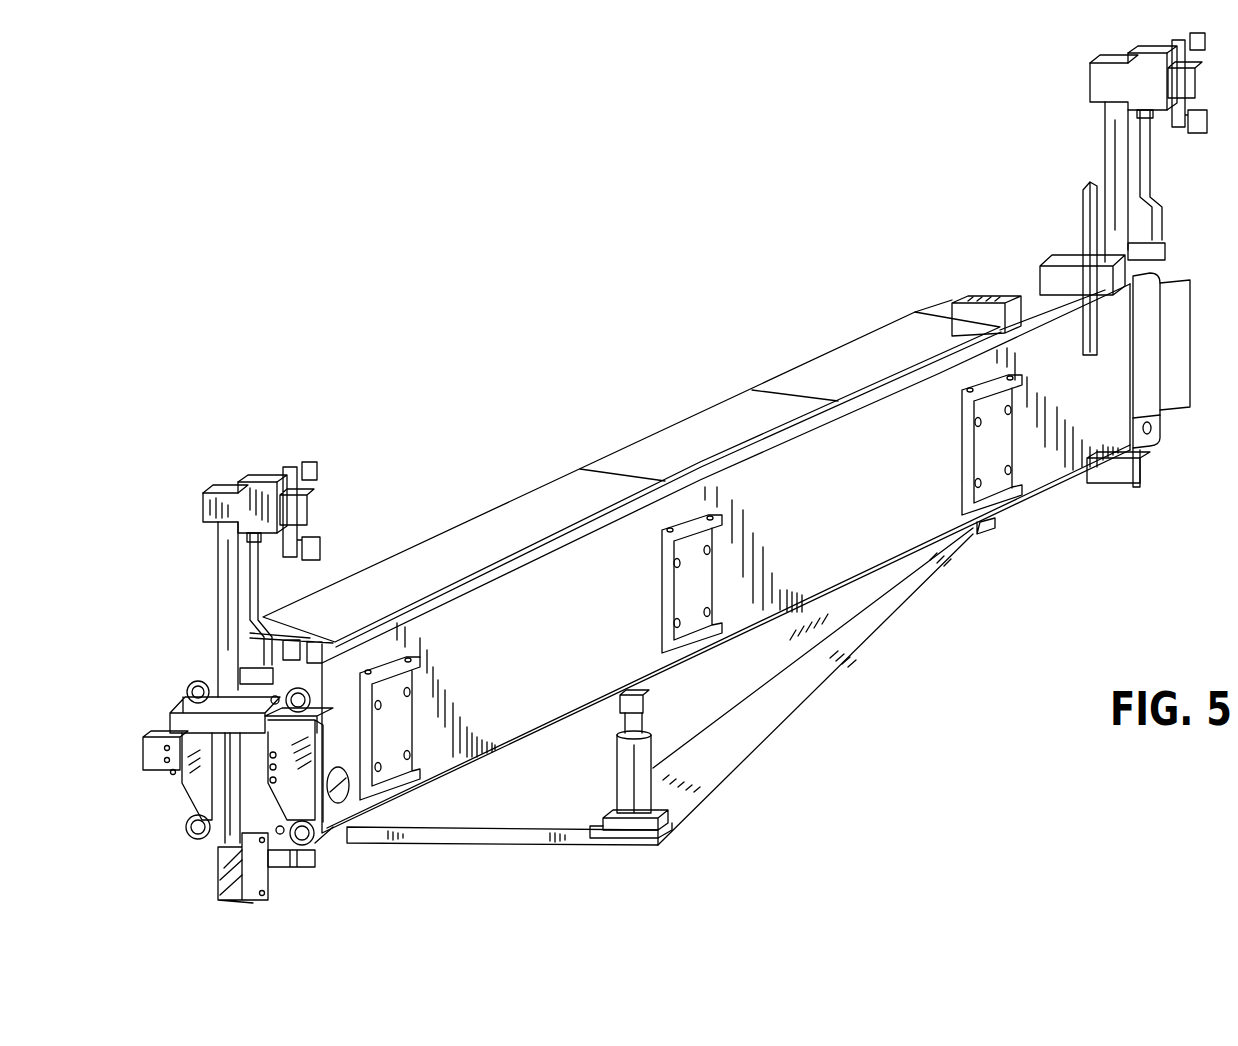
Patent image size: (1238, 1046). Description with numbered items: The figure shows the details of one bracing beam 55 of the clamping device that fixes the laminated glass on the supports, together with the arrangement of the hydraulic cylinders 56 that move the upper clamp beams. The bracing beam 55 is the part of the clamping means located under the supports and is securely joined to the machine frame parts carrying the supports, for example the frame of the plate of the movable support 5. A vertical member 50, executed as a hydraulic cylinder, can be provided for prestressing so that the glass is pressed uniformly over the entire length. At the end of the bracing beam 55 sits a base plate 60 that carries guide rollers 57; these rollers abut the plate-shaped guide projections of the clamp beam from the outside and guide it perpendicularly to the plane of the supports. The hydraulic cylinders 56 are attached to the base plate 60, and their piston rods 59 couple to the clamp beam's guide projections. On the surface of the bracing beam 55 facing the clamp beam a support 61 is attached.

The movable support 5 is at (607, 843).
The vertical member 50 is at (640, 775).
The bracing beam 55 is at (850, 540).
The hydraulic cylinder 56 is at (230, 566).
The guide roller 57 is at (198, 835).
The piston rod 59 is at (233, 783).
The base plate 60 is at (222, 750).
The support 61 is at (840, 372).